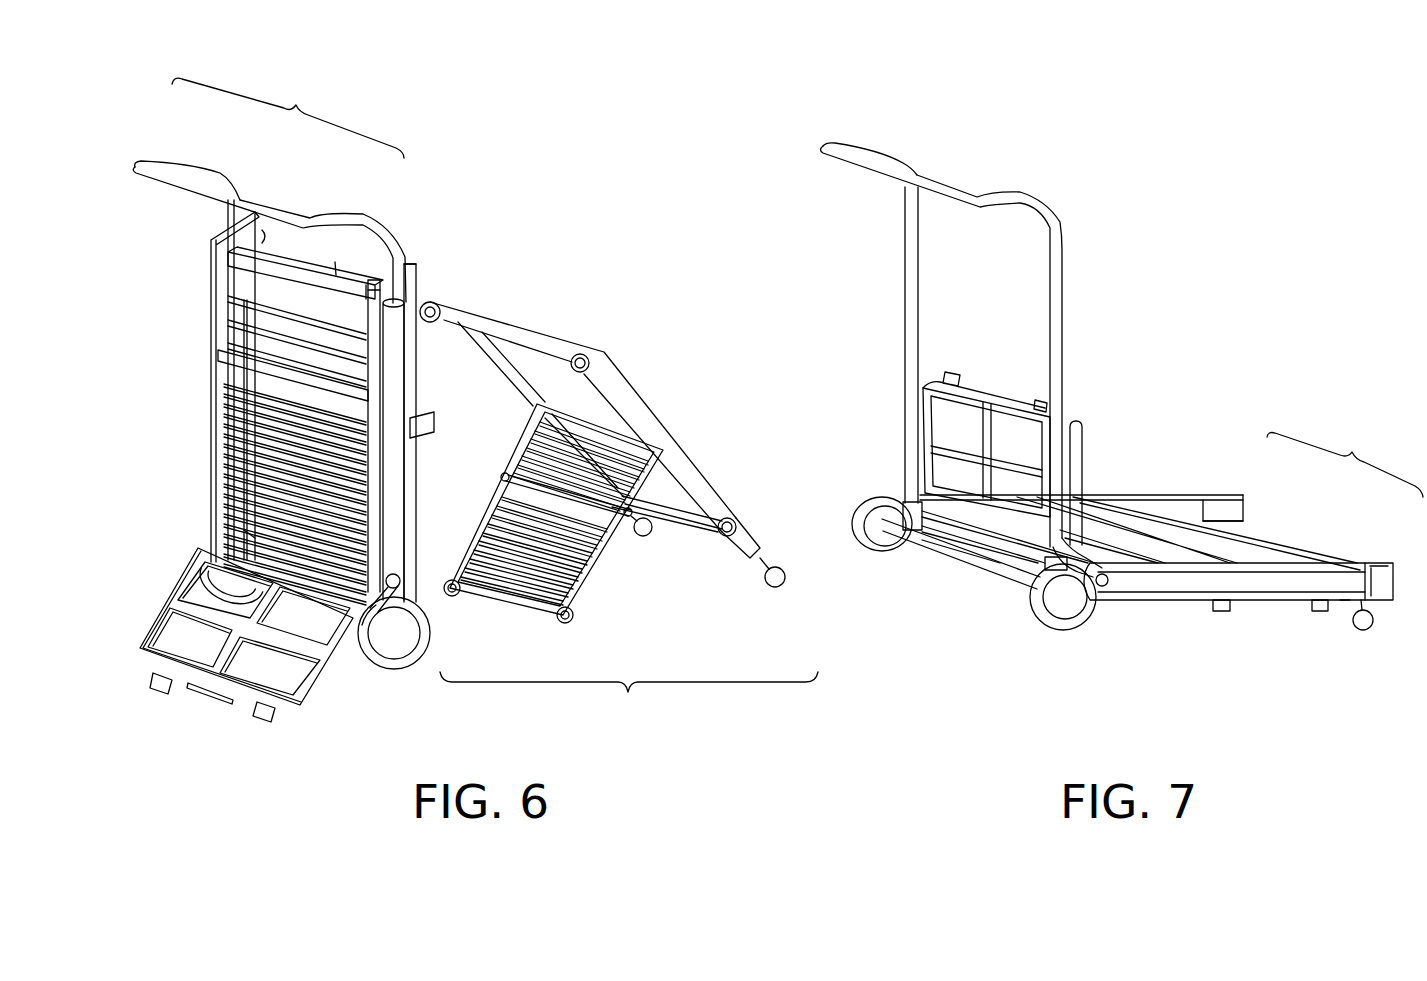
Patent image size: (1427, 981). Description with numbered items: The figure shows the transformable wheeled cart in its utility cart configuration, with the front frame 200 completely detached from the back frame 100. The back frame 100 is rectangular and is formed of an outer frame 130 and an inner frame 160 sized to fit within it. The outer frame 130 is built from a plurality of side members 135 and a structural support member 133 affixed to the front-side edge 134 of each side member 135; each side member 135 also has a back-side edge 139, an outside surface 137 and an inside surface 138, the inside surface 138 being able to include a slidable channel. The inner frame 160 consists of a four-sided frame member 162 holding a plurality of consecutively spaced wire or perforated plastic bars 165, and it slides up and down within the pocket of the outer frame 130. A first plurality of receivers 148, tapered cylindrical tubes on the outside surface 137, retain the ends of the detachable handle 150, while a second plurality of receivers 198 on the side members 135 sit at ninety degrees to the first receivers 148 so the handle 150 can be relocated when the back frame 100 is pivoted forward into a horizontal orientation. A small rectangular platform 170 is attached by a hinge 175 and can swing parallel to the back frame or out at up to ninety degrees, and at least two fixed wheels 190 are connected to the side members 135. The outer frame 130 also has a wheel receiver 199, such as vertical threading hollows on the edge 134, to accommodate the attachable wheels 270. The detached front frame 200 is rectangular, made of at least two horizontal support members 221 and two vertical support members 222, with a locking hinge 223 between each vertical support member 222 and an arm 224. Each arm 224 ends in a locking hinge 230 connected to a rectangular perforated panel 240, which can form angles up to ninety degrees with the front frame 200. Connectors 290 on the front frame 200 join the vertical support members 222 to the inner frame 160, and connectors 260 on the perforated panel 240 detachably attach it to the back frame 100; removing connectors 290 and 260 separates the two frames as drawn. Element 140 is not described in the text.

In FIG. 6, the back frame 100 is at (288, 118).
In FIG. 6, the outer frame 130 is at (216, 448).
In FIG. 7, the outer frame 130 is at (1253, 510).
In FIG. 6, the structural support member 133 is at (226, 357).
In FIG. 7, the structural support member 133 is at (1095, 498).
In FIG. 6, the front-side edge 134 is at (416, 500).
In FIG. 7, the front-side edge 134 is at (1383, 585).
In FIG. 6, the side members 135 is at (210, 253).
In FIG. 7, the side members 135 is at (1222, 495).
In FIG. 6, the outside surface 137 is at (420, 262).
In FIG. 6, the inside surface 138 is at (266, 246).
In FIG. 6, the back-side edge 139 is at (212, 298).
In FIG. 6, the mounting lug 140 is at (426, 416).
In FIG. 7, the mounting lug 140 is at (1222, 613).
In FIG. 6, the first plurality of receivers 148 is at (406, 358).
In FIG. 6, the detachable handle 150 is at (272, 198).
In FIG. 7, the detachable handle 150 is at (826, 152).
In FIG. 6, the inner frame 160 is at (332, 275).
In FIG. 6, the four-sided frame member 162 is at (228, 270).
In FIG. 6, the wire or perforated plastic bars 165 is at (240, 505).
In FIG. 6, the small rectangular platform 170 is at (300, 712).
In FIG. 7, the small rectangular platform 170 is at (975, 386).
In FIG. 6, the hinge 175 is at (428, 618).
In FIG. 7, the hinge 175 is at (1108, 590).
In FIG. 6, the fixed wheels 190 is at (418, 640).
In FIG. 7, the fixed wheels 190 is at (1045, 610).
In FIG. 7, the second plurality of receivers 198 is at (1025, 578).
In FIG. 7, the wheel receiver 199 is at (1343, 610).
In FIG. 6, the front frame 200 is at (629, 700).
In FIG. 6, the horizontal support members 221 is at (540, 318).
In FIG. 6, the vertical support members 222 is at (484, 332).
In FIG. 6, the locking hinge 223 is at (738, 518).
In FIG. 6, the arm 224 is at (702, 548).
In FIG. 6, the locking hinge 230 is at (499, 475).
In FIG. 6, the rectangular perforated panel 240 is at (598, 582).
In FIG. 6, the connectors 260 is at (450, 578).
In FIG. 6, the detachable wheels 270 is at (788, 574).
In FIG. 7, the detachable wheels 270 is at (1370, 630).
In FIG. 6, the connectors 290 is at (438, 302).